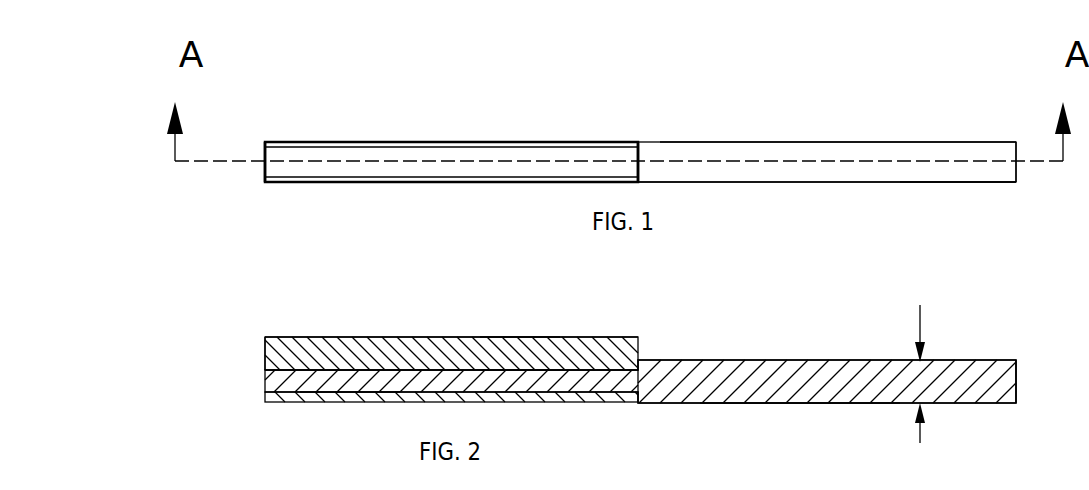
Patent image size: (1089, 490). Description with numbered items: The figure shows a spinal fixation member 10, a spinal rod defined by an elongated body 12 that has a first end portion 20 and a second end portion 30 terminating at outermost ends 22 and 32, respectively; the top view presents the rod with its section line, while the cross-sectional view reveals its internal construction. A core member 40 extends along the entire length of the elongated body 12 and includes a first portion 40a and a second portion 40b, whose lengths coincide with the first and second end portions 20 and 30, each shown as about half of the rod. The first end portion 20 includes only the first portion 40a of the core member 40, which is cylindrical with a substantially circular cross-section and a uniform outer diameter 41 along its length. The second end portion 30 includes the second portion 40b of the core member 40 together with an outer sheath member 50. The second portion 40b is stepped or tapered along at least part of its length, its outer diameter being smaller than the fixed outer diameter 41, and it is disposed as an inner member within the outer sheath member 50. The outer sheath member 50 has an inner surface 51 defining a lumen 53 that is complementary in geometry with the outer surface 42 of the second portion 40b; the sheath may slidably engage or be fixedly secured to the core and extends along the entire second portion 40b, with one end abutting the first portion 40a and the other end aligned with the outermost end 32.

In FIG. 1, the spinal fixation member 10 is at (875, 223).
In FIG. 2, the spinal fixation member 10 is at (345, 298).
In FIG. 1, the elongated body 12 is at (648, 140).
In FIG. 1, the first end portion 20 is at (997, 140).
In FIG. 2, the first end portion 20 is at (787, 360).
In FIG. 1, the outermost end 22 is at (1016, 170).
In FIG. 2, the outermost end 22 is at (1016, 385).
In FIG. 1, the second end portion 30 is at (285, 140).
In FIG. 2, the second end portion 30 is at (443, 335).
In FIG. 1, the outermost end 32 is at (265, 172).
In FIG. 2, the outermost end 32 is at (265, 355).
In FIG. 1, the core member 40 is at (842, 140).
In FIG. 2, the core member 40 is at (265, 390).
In FIG. 1, the first portion 40a is at (752, 142).
In FIG. 2, the first portion 40a is at (782, 403).
In FIG. 2, the second portion 40b is at (345, 391).
In FIG. 2, the outer diameter 41 is at (922, 387).
In FIG. 2, the outer surface 42 is at (295, 393).
In FIG. 1, the outer sheath member 50 is at (437, 142).
In FIG. 2, the outer sheath member 50 is at (522, 347).
In FIG. 2, the inner surface 51 is at (502, 370).
In FIG. 2, the lumen 53 is at (265, 376).